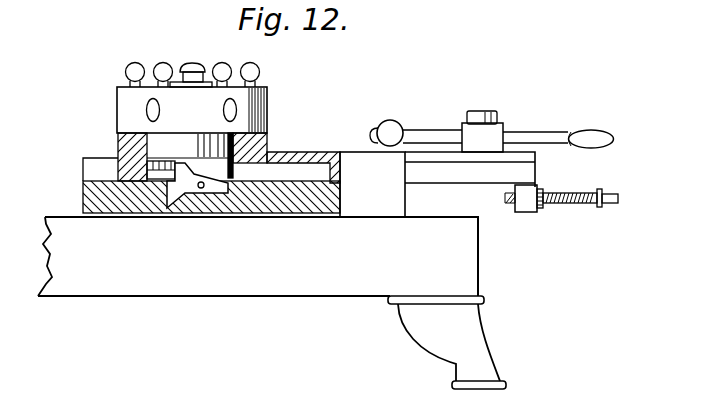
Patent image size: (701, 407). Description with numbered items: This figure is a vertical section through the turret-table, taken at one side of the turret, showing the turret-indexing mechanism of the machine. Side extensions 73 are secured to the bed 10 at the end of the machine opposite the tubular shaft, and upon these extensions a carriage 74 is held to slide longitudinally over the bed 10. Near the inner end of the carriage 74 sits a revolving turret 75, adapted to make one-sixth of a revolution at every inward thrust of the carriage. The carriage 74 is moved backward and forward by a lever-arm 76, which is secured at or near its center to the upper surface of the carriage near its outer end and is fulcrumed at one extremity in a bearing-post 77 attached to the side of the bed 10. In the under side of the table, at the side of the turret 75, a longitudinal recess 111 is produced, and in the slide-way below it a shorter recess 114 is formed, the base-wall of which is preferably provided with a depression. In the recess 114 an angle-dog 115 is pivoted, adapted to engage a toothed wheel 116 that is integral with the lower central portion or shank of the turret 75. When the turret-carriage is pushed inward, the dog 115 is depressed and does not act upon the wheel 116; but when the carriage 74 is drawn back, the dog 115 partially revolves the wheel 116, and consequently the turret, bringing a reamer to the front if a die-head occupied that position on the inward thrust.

The bed 10 is at (272, 303).
The side extensions 73 is at (372, 184).
The carriage 74 is at (303, 158).
The revolving turret 75 is at (222, 101).
The lever-arm 76 is at (558, 131).
The bearing-post 77 is at (391, 121).
The longitudinal recess 111 is at (211, 189).
The shorter recess 114 is at (181, 209).
The angle-dog 115 is at (262, 171).
The toothed wheel 116 is at (163, 172).